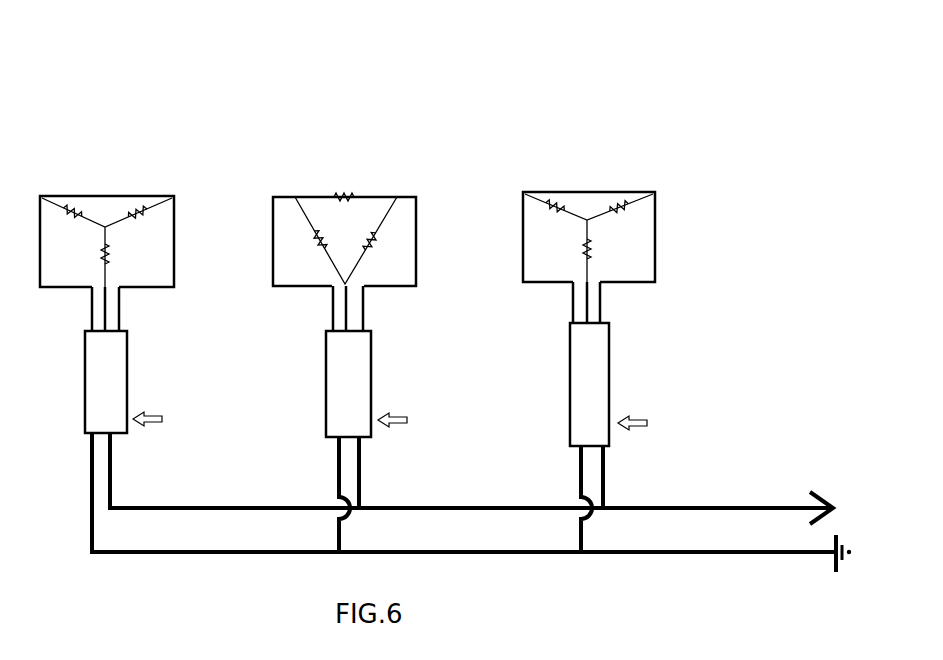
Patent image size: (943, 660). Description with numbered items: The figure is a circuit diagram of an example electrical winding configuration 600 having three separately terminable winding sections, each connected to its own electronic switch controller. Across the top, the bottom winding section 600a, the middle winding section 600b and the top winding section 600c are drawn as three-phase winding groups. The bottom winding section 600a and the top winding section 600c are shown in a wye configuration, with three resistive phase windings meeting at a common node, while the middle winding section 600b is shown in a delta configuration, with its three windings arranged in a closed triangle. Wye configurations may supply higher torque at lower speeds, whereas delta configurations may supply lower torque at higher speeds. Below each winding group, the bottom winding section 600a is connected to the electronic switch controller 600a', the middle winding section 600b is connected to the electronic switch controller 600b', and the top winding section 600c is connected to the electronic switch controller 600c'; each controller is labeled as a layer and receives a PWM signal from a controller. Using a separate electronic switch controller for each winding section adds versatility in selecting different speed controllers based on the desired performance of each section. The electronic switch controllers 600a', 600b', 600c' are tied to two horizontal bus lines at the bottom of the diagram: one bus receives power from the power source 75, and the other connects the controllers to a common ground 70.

The electrical winding configuration 600 is at (441, 100).
The bottom winding section 600a is at (107, 191).
The middle winding section 600b is at (344, 189).
The top winding section 600c is at (589, 188).
The electronic switch controller 600a' is at (121, 360).
The electronic switch controller 600b' is at (360, 361).
The electronic switch controller 600c' is at (603, 364).
The power source 75 is at (808, 500).
The common ground 70 is at (797, 553).